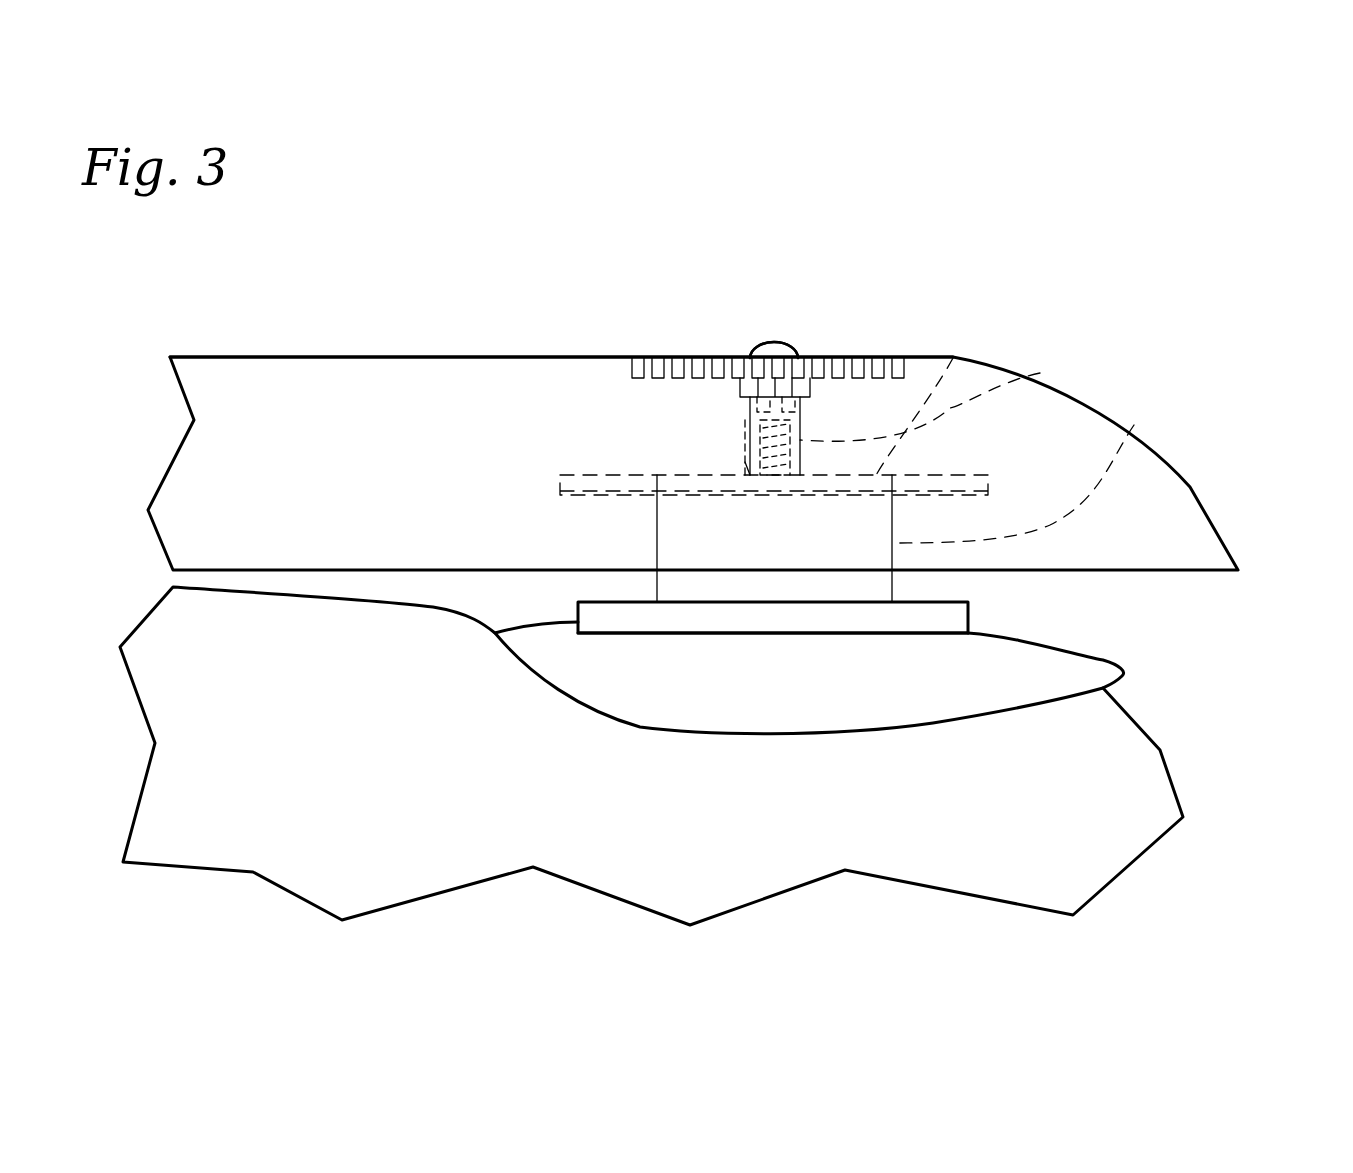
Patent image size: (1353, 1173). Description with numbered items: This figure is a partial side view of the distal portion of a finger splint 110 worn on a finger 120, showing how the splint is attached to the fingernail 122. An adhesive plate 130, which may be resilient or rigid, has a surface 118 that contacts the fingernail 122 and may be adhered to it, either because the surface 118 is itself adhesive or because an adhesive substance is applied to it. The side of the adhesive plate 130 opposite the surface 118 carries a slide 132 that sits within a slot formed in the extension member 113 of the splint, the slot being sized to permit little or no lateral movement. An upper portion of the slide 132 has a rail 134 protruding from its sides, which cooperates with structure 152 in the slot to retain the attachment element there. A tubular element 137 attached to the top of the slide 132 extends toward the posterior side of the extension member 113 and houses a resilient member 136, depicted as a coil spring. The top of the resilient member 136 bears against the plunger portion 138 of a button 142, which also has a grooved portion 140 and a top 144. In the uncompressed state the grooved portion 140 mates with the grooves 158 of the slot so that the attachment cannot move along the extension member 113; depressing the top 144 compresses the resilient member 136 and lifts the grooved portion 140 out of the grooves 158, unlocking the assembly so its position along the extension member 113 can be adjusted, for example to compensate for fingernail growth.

The finger splint 110 is at (438, 284).
The extension member 113 is at (327, 357).
The surface 118 is at (917, 633).
The finger 120 is at (1180, 798).
The fingernail 122 is at (1053, 703).
The adhesive plate 130 is at (972, 615).
The slide 132 is at (1134, 425).
The rail 134 is at (1040, 373).
The resilient member 136 is at (750, 463).
The tubular element 137 is at (953, 358).
The plunger portion 138 is at (750, 413).
The grooved portion 140 is at (740, 386).
The button 142 is at (790, 342).
The top 144 is at (773, 342).
The structure 152 is at (560, 475).
The grooves 158 is at (875, 365).